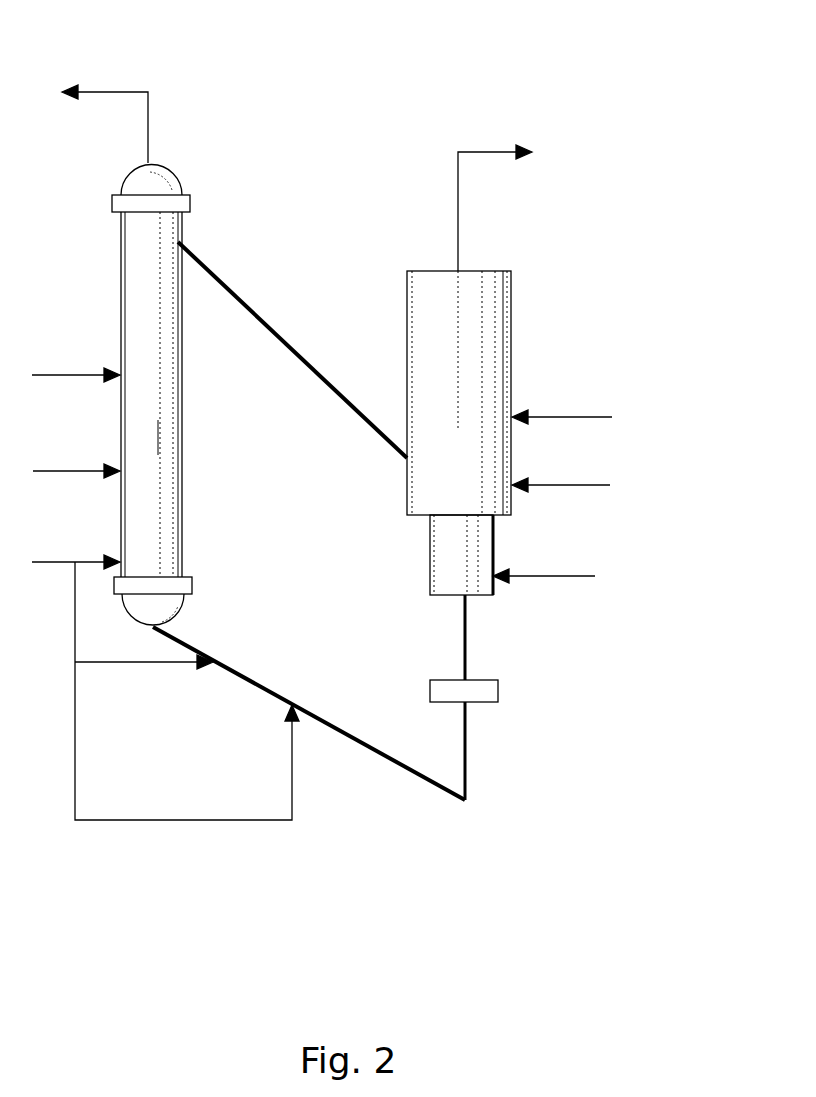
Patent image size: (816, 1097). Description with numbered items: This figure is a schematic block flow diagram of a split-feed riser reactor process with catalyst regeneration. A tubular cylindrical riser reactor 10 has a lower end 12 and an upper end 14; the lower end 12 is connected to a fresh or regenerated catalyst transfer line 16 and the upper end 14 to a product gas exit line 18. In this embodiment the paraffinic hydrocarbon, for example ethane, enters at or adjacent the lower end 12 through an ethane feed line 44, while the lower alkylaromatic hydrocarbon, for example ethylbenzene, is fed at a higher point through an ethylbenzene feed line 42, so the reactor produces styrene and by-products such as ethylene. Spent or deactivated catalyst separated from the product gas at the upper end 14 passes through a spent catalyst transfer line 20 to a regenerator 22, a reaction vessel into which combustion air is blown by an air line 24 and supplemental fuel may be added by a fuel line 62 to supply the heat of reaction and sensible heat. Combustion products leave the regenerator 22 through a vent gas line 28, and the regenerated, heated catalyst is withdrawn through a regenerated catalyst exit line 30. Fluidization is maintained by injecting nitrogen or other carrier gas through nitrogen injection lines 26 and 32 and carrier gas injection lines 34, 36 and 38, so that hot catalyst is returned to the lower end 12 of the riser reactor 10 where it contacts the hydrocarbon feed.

The riser reactor 10 is at (168, 500).
The lower end 12 is at (160, 627).
The upper end 14 is at (152, 158).
The catalyst transfer line 16 is at (278, 690).
The product gas exit line 18 is at (125, 88).
The spent catalyst transfer line 20 is at (270, 323).
The regenerator 22 is at (427, 484).
The air line 24 is at (540, 487).
The nitrogen injection line 26 is at (582, 578).
The vent gas line 28 is at (457, 218).
The regenerated catalyst exit line 30 is at (462, 640).
The nitrogen injection line 32 is at (475, 703).
The carrier gas injection line 34 is at (105, 818).
The carrier gas injection line 36 is at (98, 665).
The carrier gas injection line 38 is at (67, 563).
The ethylbenzene feed line 42 is at (92, 378).
The ethane feed line 44 is at (93, 475).
The fuel line 62 is at (550, 415).